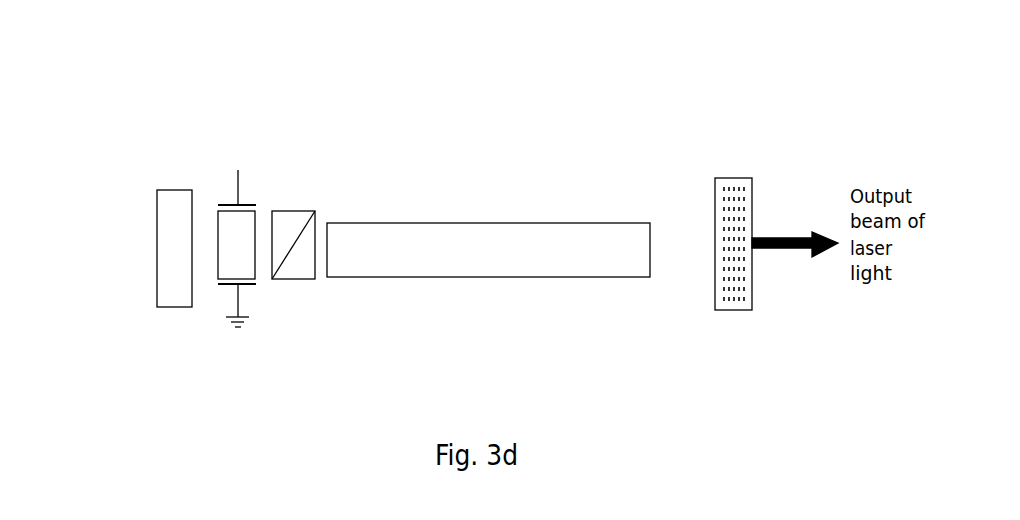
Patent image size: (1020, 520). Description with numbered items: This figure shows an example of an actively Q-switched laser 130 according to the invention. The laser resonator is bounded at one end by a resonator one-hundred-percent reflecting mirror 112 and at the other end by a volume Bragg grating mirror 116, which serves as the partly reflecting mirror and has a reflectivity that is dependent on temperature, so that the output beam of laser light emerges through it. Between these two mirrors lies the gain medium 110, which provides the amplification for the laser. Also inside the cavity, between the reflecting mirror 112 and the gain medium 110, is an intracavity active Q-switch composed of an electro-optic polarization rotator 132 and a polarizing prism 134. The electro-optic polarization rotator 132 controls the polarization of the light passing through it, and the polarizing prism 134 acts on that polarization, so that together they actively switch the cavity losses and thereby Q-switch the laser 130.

The resonator 100% reflecting mirror 112 is at (158, 203).
The electro-optic polarization rotator 132 is at (230, 185).
The polarizing prism 134 is at (318, 203).
The gain medium 110 is at (488, 250).
The volume Bragg grating mirror 116 is at (715, 190).
The actively Q-switched laser 130 is at (493, 98).